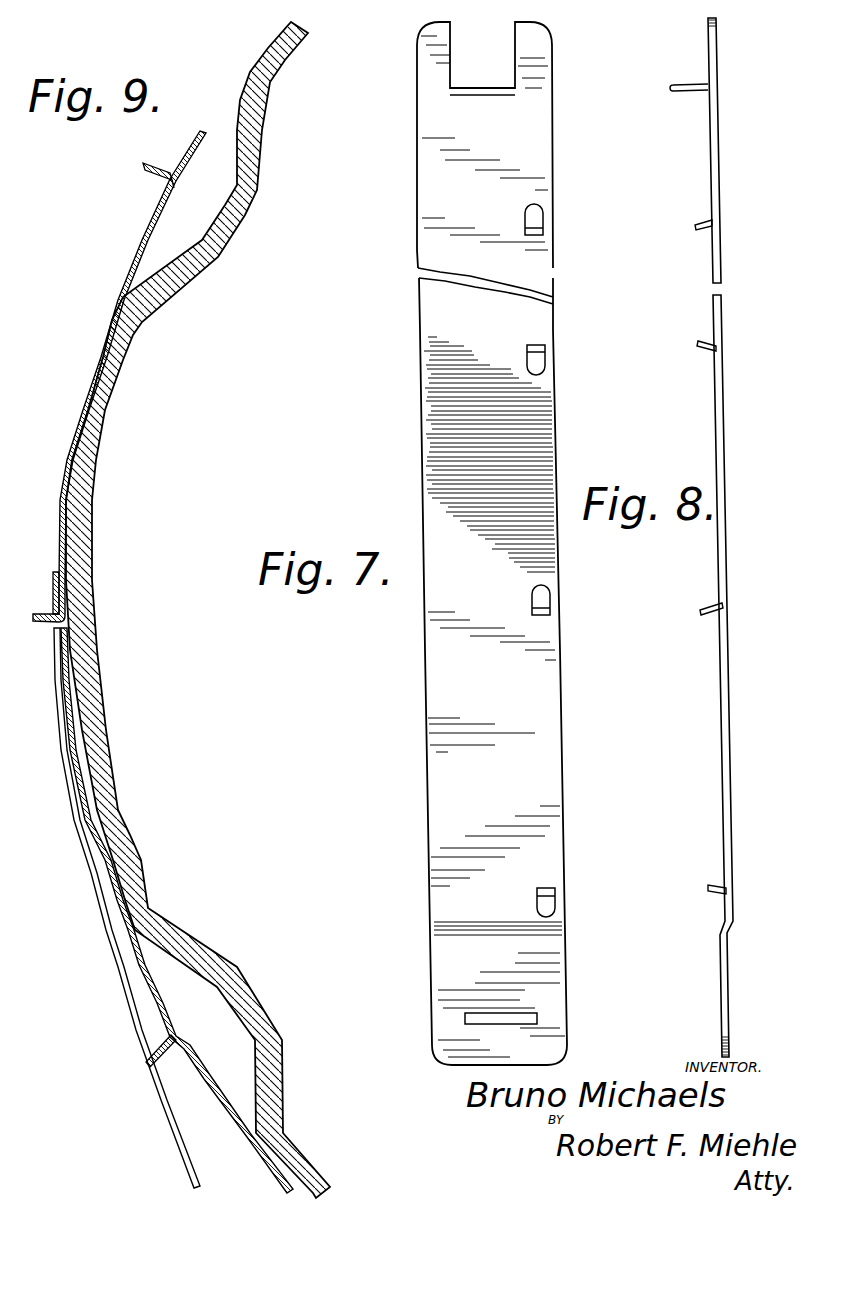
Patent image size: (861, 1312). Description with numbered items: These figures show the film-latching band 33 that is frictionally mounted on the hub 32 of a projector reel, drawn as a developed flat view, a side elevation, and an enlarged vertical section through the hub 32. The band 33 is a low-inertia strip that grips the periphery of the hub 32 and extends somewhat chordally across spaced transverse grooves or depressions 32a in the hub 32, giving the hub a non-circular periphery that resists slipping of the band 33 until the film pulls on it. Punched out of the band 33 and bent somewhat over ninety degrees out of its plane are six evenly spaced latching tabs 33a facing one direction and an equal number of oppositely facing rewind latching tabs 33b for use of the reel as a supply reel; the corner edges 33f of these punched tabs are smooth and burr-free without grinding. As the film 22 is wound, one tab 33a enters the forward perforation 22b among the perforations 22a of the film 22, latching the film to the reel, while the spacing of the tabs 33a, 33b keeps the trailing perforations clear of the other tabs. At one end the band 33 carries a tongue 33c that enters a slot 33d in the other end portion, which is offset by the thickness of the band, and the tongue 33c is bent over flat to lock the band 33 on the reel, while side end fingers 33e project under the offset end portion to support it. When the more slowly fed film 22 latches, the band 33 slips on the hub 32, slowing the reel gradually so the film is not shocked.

In FIG. 9, the film 22 is at (82, 800).
In FIG. 9, the perforations (leading end) of the film 22a is at (70, 560).
In FIG. 9, the forward perforation in the film 22b is at (70, 668).
In FIG. 9, the hub 32 is at (97, 462).
In FIG. 9, the transverse grooves, recesses or depressions 32a is at (227, 247).
In FIG. 9, the latching band 33 is at (85, 409).
In FIG. 7, the latching band 33 is at (430, 445).
In FIG. 8, the latching band 33 is at (727, 757).
In FIG. 9, the tabs (teeth) 33a is at (33, 612).
In FIG. 7, the tabs (teeth) 33a is at (542, 355).
In FIG. 8, the tabs (teeth) 33a is at (698, 344).
In FIG. 9, the rewind latching tabs 33b is at (160, 166).
In FIG. 7, the rewind latching tabs 33b is at (543, 224).
In FIG. 8, the rewind latching tabs 33b is at (692, 224).
In FIG. 7, the tongue 33c is at (488, 95).
In FIG. 8, the tongue 33c is at (682, 86).
In FIG. 7, the slot 33d is at (465, 1019).
In FIG. 7, the end prongs of retaining strip 33e is at (423, 71).
In FIG. 8, the end prongs of retaining strip 33e is at (717, 52).
In FIG. 9, the corner edges 33f is at (152, 174).